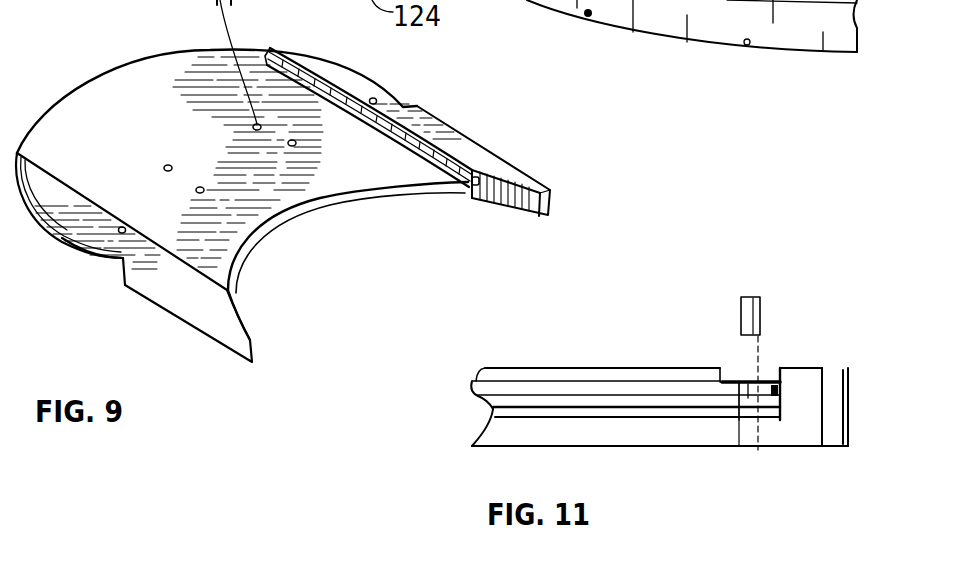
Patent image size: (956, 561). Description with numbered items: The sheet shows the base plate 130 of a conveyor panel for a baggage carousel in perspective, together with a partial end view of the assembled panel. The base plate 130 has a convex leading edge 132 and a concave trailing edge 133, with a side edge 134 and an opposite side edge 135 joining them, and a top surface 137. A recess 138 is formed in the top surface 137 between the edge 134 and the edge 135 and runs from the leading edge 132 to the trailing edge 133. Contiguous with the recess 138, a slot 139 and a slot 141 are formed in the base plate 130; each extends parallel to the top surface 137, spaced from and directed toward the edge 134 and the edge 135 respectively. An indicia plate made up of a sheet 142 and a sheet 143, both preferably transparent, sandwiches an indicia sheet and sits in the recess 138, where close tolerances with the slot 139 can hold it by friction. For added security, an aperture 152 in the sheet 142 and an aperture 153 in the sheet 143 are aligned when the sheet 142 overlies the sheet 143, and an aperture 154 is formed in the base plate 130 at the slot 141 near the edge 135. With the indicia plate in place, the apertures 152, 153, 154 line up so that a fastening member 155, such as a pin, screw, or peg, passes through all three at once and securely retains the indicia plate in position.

In FIG. 9, the base plate 130 is at (213, 343).
In FIG. 11, the base plate 130 is at (797, 432).
In FIG. 9, the leading edge 132 is at (107, 72).
In FIG. 9, the trailing edge 133 is at (302, 212).
In FIG. 9, the edge 134 is at (440, 122).
In FIG. 9, the edge 135 is at (88, 255).
In FIG. 9, the top surface 137 is at (55, 197).
In FIG. 9, the recess 138 is at (130, 129).
In FIG. 9, the slot 139 is at (468, 188).
In FIG. 11, the slot 139 is at (778, 380).
In FIG. 9, the slot 141 is at (232, 288).
In FIG. 11, the sheet 142 is at (513, 388).
In FIG. 11, the sheet 143 is at (640, 403).
In FIG. 11, the aperture 152 is at (765, 380).
In FIG. 11, the aperture 153 is at (740, 411).
In FIG. 11, the aperture 154 is at (743, 378).
In FIG. 11, the fastening member 155 is at (750, 293).